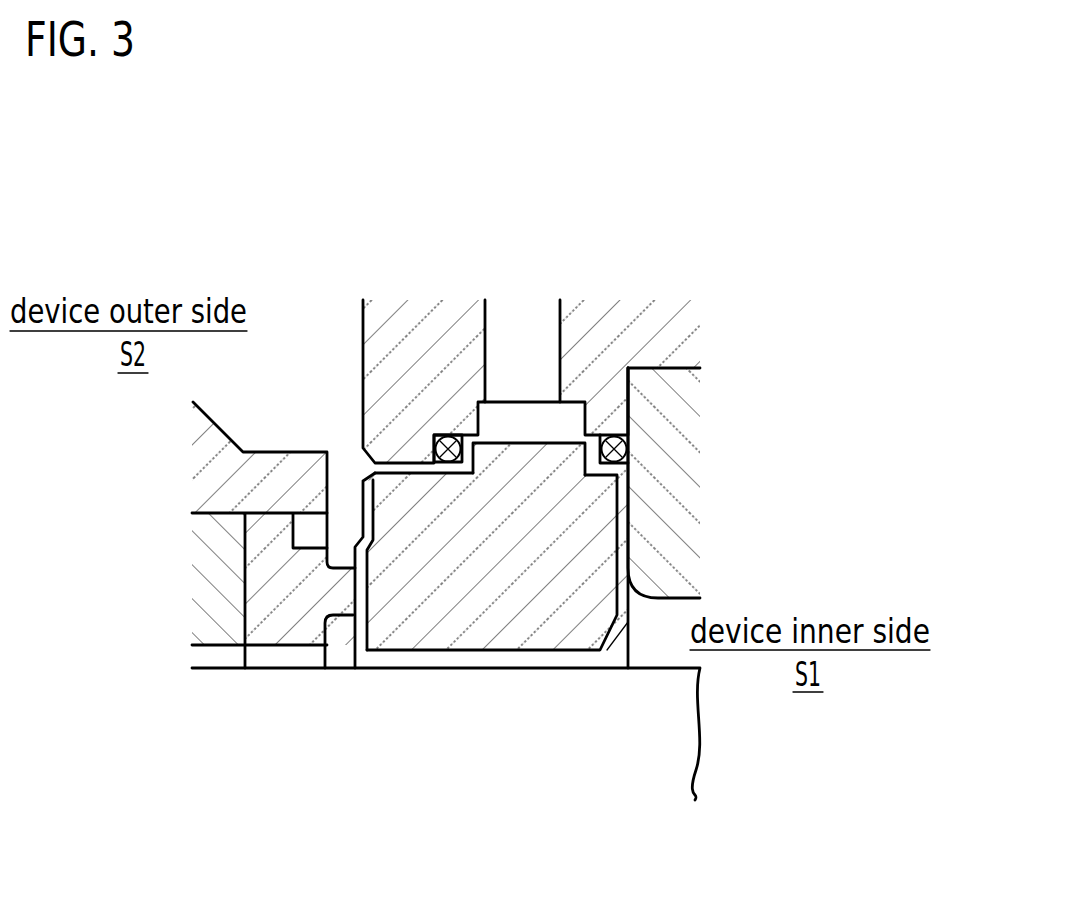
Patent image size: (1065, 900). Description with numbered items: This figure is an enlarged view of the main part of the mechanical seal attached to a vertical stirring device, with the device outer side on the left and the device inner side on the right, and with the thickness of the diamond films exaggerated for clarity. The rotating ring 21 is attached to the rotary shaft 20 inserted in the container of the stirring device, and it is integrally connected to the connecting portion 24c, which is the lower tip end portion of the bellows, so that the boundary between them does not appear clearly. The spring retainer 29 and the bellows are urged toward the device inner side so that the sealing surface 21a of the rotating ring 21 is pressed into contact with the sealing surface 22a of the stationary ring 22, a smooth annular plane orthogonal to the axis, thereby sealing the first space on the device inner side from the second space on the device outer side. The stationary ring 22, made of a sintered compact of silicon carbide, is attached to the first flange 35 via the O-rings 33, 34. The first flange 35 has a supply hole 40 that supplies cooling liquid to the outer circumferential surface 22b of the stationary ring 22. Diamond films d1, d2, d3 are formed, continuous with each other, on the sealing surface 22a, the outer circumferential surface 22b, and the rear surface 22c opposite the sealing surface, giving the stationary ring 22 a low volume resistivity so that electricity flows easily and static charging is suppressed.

The rotary shaft 20 is at (573, 745).
The rotating ring 21 is at (285, 636).
The sealing surface 21a is at (384, 628).
The stationary ring 22 is at (448, 636).
The sealing surface 22a is at (385, 613).
The outer circumferential surface 22b is at (560, 428).
The rear surface 22c is at (629, 548).
The connecting portion 24c is at (210, 637).
The spring retainer 29 is at (222, 442).
The O-ring 33 is at (446, 440).
The O-ring 34 is at (618, 447).
The first flange 35 is at (378, 338).
The supply hole 40 is at (545, 372).
The diamond film d1 is at (355, 627).
The diamond film d2 is at (503, 437).
The diamond film d3 is at (624, 617).